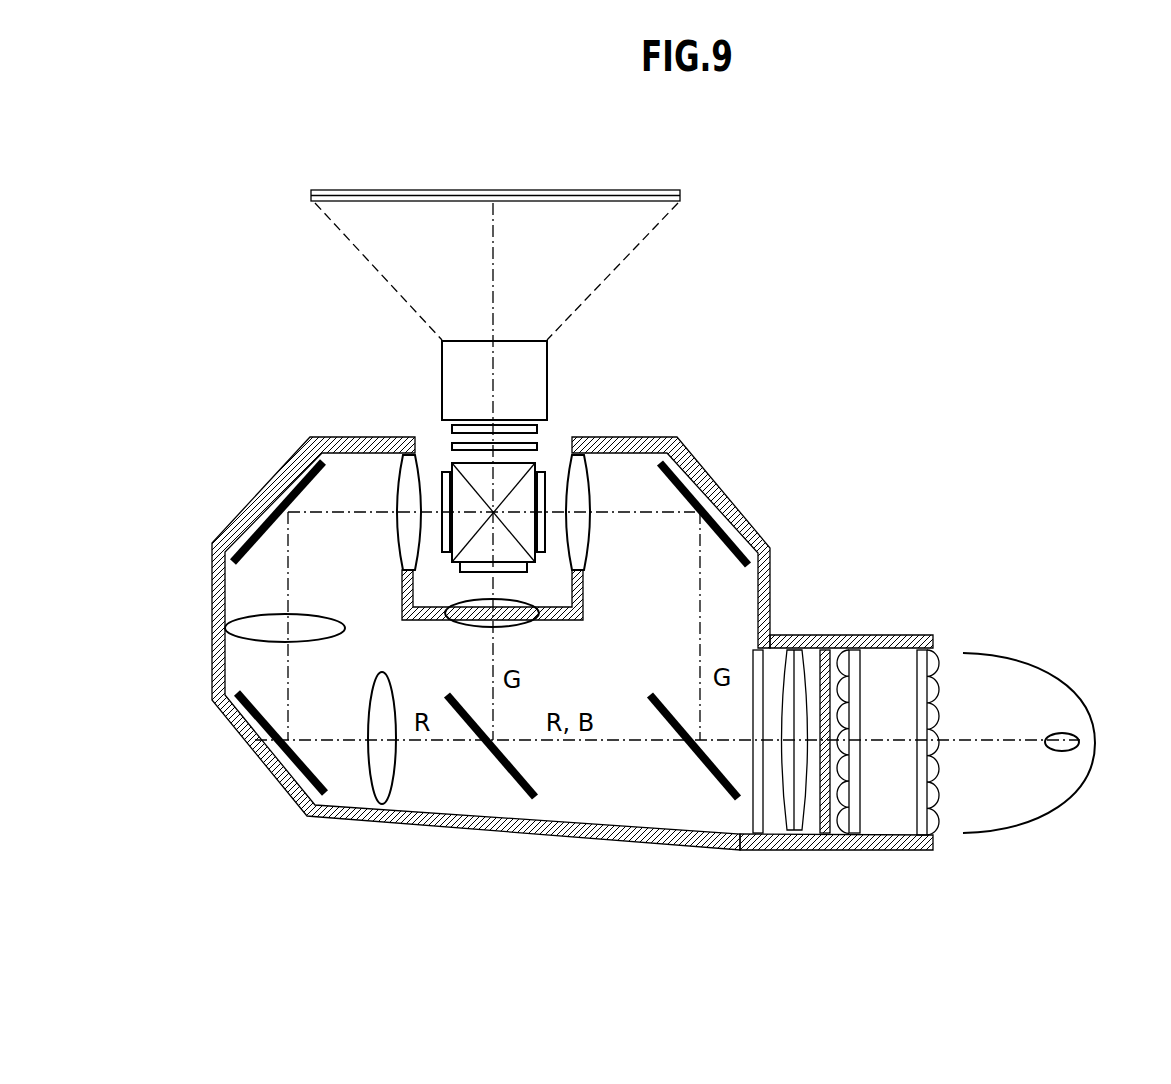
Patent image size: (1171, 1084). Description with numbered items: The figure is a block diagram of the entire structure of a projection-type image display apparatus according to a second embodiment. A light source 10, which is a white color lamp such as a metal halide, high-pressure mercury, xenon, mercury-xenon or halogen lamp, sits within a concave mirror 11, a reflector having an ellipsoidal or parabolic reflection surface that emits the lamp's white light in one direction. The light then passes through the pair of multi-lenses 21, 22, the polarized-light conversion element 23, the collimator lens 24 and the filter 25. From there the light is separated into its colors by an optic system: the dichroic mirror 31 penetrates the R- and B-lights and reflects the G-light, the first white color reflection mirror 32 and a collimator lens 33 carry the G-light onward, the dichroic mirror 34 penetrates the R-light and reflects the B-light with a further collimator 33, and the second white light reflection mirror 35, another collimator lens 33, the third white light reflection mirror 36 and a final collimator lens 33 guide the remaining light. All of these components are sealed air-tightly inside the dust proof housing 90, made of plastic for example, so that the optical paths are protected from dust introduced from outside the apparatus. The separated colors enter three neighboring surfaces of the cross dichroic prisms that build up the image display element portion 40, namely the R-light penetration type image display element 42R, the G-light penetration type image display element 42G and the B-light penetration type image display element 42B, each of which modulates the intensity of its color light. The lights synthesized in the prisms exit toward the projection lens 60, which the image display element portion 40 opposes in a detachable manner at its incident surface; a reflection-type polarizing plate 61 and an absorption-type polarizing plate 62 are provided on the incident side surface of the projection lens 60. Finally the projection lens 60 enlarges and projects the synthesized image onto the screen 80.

The light source 10 is at (1070, 733).
The concave mirror 11 is at (1010, 658).
The multi-lens 21 is at (938, 820).
The multi-lens 22 is at (853, 820).
The polarized-light conversion element 23 is at (817, 633).
The collimator lens 24 is at (793, 817).
The filter 25 is at (743, 847).
The dichroic mirror 31 is at (697, 757).
The first white color reflection mirror 32 is at (740, 563).
The collimator lens 33 is at (307, 627).
The dichroic mirror 34 is at (493, 763).
The second white light reflection mirror 35 is at (307, 758).
The third white light reflection mirror 36 is at (317, 474).
The image display element portion 40 is at (527, 467).
The R-light penetration type image display element 42R is at (447, 482).
The G-light penetration type image display element 42G is at (547, 493).
The B-light penetration type image display element 42B is at (468, 578).
The projection lens 60 is at (532, 363).
The reflection-type polarizing plate 61 is at (452, 446).
The absorption-type polarizing plate 62 is at (452, 428).
The screen 80 is at (642, 192).
The dust proof housing 90 is at (695, 472).